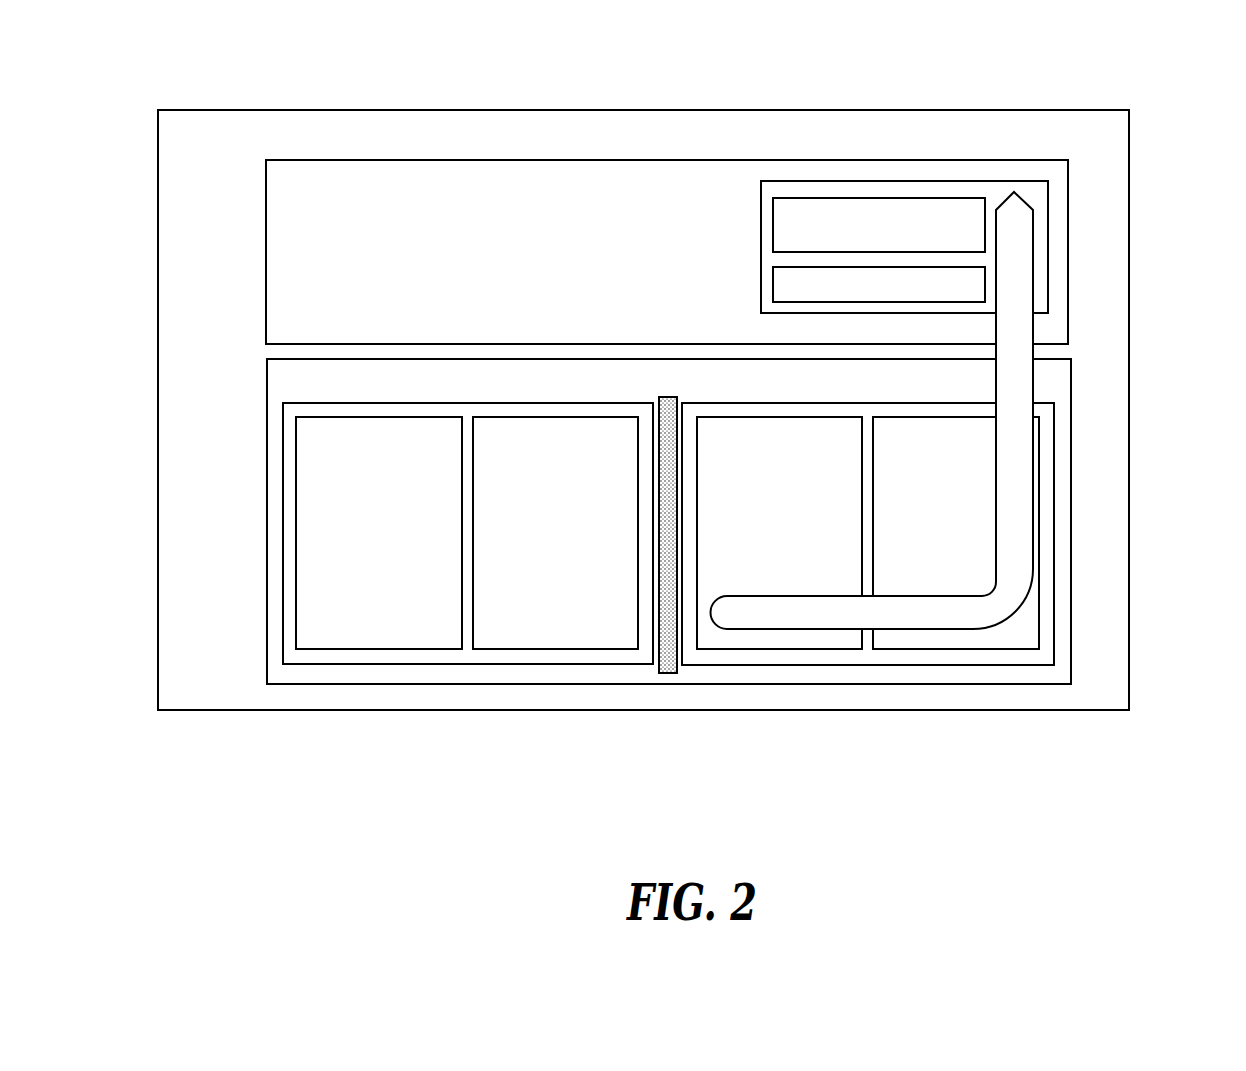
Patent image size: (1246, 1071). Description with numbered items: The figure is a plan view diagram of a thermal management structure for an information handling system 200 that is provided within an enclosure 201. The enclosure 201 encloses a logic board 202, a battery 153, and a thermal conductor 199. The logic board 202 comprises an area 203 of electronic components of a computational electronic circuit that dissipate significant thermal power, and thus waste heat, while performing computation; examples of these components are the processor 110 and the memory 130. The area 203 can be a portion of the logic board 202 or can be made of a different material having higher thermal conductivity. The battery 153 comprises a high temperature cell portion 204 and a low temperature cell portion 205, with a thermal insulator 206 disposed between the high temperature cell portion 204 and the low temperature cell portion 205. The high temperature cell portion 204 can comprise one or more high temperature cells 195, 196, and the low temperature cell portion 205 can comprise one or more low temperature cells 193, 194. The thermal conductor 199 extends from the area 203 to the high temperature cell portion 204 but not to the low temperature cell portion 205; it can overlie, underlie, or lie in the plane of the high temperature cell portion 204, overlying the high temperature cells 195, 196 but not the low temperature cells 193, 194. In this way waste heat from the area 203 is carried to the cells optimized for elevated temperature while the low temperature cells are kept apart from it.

The information handling system 200 is at (298, 38).
The enclosure 201 is at (1073, 111).
The logic board 202 is at (1068, 272).
The area 203 is at (1048, 210).
The processor 110 is at (773, 220).
The memory 130 is at (773, 282).
The thermal conductor 199 is at (1033, 378).
The battery 153 is at (1072, 493).
The low temperature cell portion 205 is at (530, 667).
The high temperature cell portion 204 is at (1002, 665).
The thermal insulator 206 is at (668, 673).
The low temperature cell 193 is at (357, 652).
The low temperature cell 194 is at (483, 652).
The high temperature cell 195 is at (795, 652).
The high temperature cell 196 is at (927, 652).